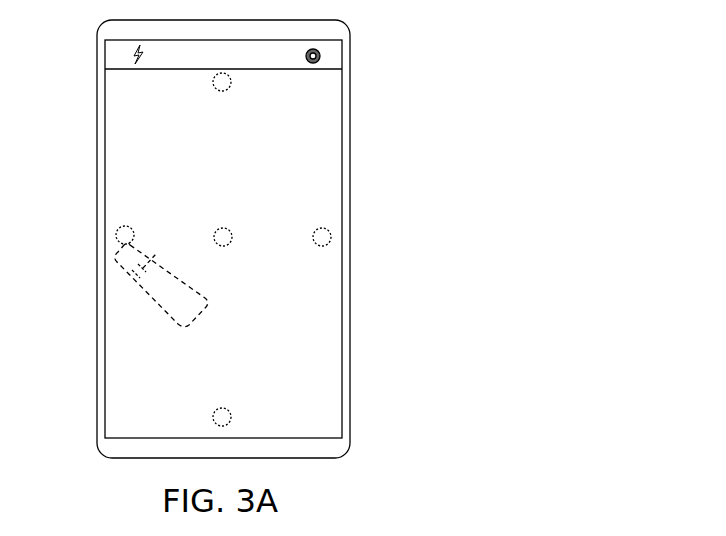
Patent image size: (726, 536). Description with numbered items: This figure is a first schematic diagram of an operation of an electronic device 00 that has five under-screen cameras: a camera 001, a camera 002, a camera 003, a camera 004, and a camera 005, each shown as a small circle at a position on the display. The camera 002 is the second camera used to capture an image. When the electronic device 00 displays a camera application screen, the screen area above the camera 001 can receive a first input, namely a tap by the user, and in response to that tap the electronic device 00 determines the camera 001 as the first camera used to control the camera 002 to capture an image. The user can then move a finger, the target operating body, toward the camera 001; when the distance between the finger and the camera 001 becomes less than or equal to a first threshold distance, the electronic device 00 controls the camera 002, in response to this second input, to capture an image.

The electronic device 00 is at (103, 41).
The camera 001 is at (121, 228).
The camera 002 is at (221, 91).
The camera 003 is at (320, 229).
The camera 004 is at (222, 408).
The camera 005 is at (217, 229).